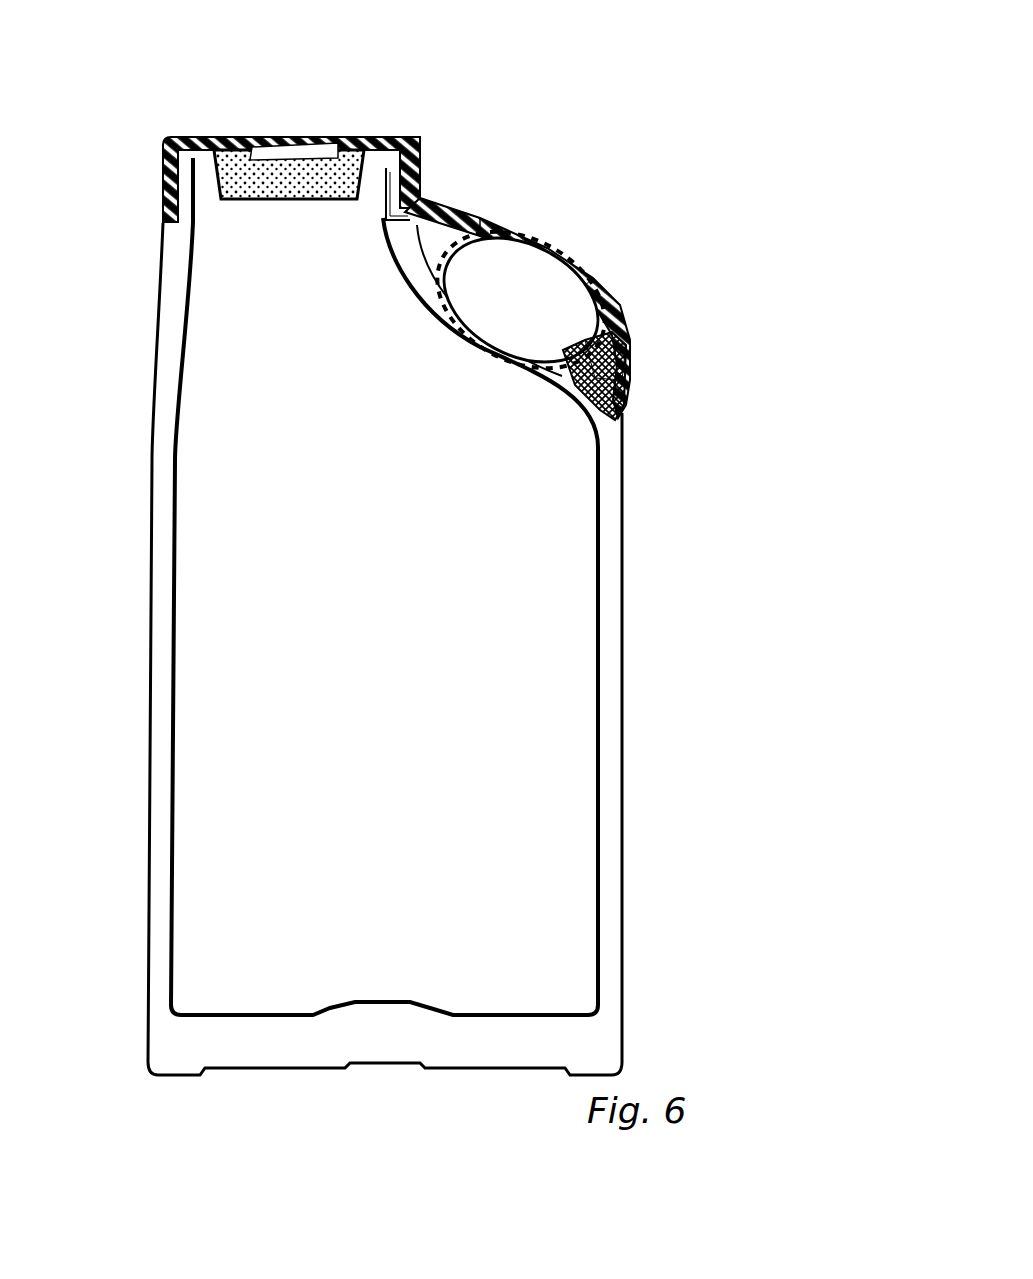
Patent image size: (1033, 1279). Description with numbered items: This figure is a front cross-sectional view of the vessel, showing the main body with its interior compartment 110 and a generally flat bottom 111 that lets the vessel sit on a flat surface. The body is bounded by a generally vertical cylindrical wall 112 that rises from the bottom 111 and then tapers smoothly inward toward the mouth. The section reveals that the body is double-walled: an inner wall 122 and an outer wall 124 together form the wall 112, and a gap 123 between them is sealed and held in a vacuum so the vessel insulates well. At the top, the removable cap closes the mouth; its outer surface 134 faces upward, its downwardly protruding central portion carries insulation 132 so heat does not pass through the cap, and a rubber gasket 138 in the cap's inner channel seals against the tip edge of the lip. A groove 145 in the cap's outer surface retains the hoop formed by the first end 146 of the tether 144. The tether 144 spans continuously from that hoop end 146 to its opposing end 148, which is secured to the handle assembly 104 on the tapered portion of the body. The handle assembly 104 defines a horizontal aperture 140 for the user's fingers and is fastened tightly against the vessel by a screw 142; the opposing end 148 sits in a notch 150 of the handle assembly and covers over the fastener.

The handle assembly 104 is at (577, 250).
The interior compartment 110 is at (440, 620).
The bottom 111 is at (268, 1078).
The wall 112 is at (622, 782).
The inner wall 122 is at (603, 448).
The gap 123 is at (608, 538).
The outer wall 124 is at (623, 472).
The insulation 132 is at (345, 172).
The outer surface of the cap 134 is at (230, 137).
The rubber gasket 138 is at (405, 160).
The horizontal aperture 140 is at (527, 307).
The screw 142 is at (622, 372).
The tether 144 is at (513, 220).
The groove 145 is at (163, 197).
The first end of the tether 146 is at (420, 203).
The opposing end of the tether 148 is at (624, 345).
The notch 150 is at (628, 318).